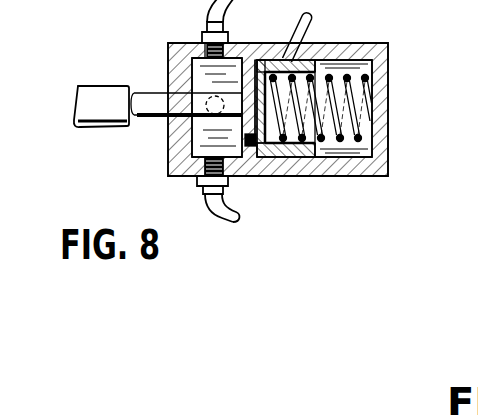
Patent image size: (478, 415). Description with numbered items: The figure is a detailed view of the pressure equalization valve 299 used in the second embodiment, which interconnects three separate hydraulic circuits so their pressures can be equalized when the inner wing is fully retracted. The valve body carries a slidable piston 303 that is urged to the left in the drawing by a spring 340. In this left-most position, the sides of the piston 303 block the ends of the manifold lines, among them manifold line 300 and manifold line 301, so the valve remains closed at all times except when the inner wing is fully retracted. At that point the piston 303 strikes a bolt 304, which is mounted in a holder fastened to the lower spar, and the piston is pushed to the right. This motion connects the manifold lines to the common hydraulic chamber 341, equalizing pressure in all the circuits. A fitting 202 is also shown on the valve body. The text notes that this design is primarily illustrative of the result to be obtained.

The equalization valve 299 is at (390, 104).
The manifold line 300 is at (312, 20).
The manifold line 301 is at (225, 5).
The bottom hose fitting 202 is at (235, 207).
The piston 303 is at (160, 78).
The bolt 304 is at (104, 92).
The spring 340 is at (348, 72).
The common hydraulic chamber 341 is at (202, 143).